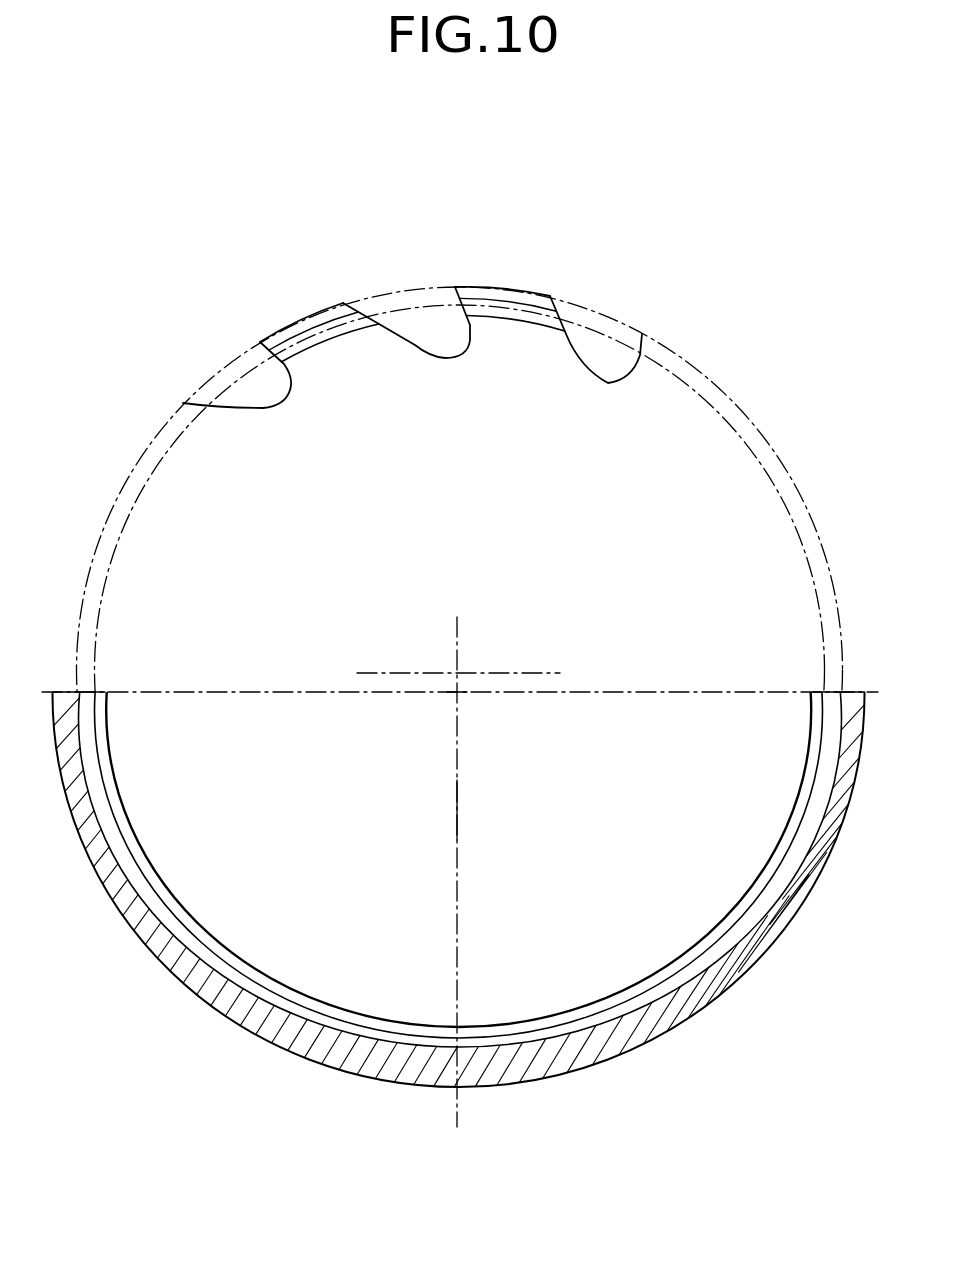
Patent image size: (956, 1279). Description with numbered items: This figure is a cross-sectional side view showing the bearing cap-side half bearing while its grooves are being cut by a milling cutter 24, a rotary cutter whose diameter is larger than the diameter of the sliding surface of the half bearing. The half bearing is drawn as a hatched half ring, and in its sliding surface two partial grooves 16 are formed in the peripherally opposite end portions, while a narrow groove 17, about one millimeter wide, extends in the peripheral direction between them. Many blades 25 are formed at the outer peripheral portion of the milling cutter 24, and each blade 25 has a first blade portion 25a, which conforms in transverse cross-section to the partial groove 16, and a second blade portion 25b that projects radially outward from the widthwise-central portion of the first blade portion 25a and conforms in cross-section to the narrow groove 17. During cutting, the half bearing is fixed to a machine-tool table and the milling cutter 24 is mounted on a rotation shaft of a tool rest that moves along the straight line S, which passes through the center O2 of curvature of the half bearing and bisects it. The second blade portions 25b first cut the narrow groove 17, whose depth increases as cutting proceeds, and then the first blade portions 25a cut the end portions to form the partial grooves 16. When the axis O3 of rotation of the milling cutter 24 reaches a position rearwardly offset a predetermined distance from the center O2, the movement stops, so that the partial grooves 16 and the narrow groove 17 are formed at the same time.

The partial groove 16 is at (100, 704).
The narrow groove 17 is at (560, 1022).
The milling cutter 24 is at (745, 381).
The blade 25 is at (440, 298).
The first blade portion 25a is at (474, 303).
The second blade portion 25b is at (538, 300).
The center of curvature O2 is at (457, 692).
The axis of rotation O3 is at (456, 672).
The straight line S is at (458, 808).